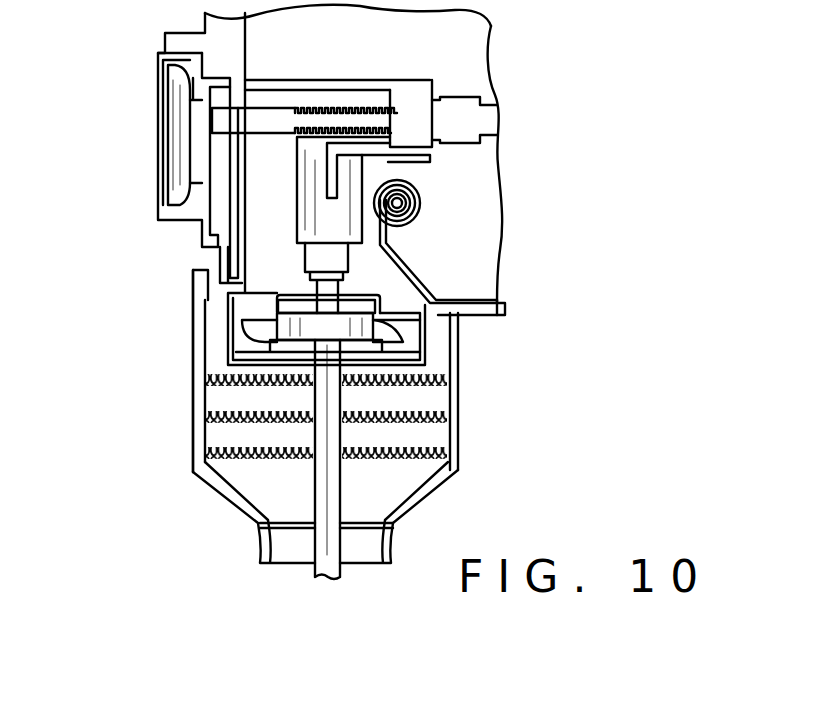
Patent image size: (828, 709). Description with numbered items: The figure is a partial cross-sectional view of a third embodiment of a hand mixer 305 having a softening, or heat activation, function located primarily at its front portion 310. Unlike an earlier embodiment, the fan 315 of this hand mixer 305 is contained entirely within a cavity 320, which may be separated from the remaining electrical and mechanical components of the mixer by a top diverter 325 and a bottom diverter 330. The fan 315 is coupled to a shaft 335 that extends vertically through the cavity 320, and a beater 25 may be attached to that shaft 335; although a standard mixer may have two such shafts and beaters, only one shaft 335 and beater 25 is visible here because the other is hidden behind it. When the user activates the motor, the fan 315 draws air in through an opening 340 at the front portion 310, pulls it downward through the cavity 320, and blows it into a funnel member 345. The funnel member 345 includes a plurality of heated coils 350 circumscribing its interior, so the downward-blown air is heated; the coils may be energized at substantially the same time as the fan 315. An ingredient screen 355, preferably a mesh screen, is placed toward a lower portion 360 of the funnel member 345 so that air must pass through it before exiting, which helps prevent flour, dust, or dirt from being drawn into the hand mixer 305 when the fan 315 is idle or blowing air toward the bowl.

The beater 25 is at (327, 508).
The hand mixer 305 is at (528, 228).
The front portion 310 is at (143, 236).
The fan 315 is at (385, 332).
The cavity 320 is at (252, 305).
The top diverter 325 is at (412, 90).
The bottom diverter 330 is at (425, 285).
The shaft 335 is at (323, 258).
The opening 340 is at (160, 137).
The funnel member 345 is at (478, 420).
The heated coils 350 is at (288, 420).
The ingredient screen 355 is at (380, 527).
The lower portion 360 is at (410, 545).